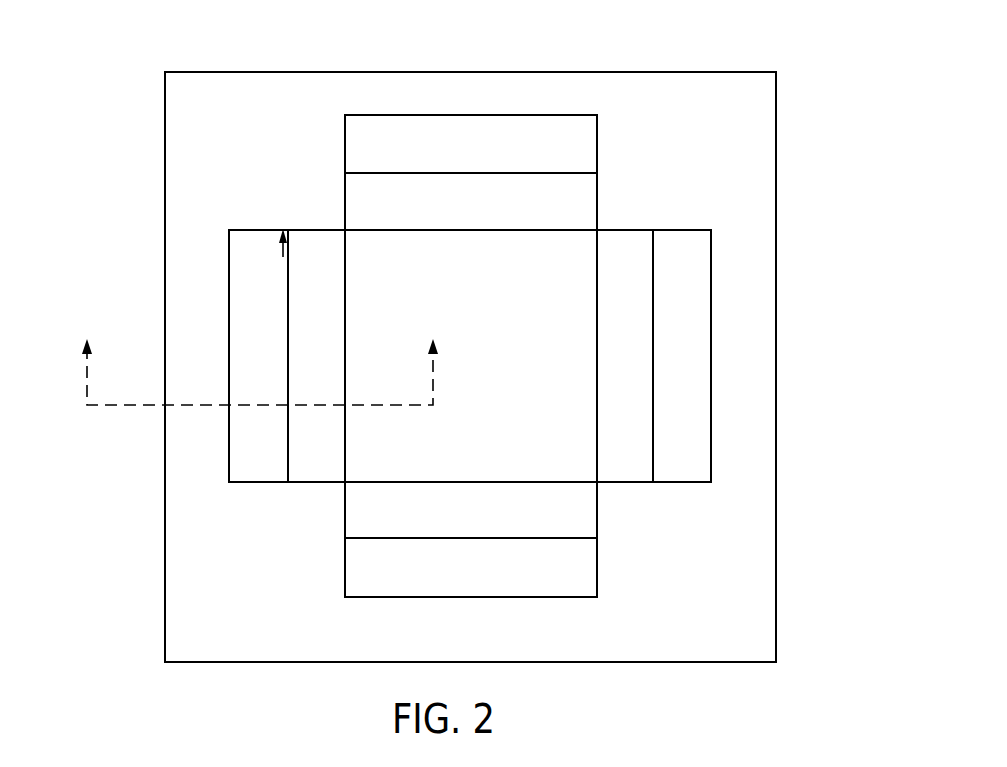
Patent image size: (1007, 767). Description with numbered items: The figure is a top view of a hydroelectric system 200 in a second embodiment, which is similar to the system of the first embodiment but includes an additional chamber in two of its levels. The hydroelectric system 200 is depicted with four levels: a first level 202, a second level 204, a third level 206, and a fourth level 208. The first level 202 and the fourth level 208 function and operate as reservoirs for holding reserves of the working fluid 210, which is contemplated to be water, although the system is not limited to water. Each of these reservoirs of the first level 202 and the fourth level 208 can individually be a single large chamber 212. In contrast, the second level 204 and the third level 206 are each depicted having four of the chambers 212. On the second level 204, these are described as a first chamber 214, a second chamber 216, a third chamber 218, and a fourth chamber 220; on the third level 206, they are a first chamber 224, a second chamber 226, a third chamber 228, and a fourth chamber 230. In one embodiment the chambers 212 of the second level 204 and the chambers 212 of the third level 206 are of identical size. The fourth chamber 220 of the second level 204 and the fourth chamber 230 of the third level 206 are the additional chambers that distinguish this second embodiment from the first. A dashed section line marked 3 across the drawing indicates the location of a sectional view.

The hydroelectric system 200 is at (453, 336).
The first level 202 is at (568, 262).
The second level 204 is at (617, 295).
The third level 206 is at (680, 323).
The fourth level 208 is at (728, 355).
The working fluid 210 is at (757, 630).
The chamber 212 is at (690, 492).
The first chamber 214 is at (493, 213).
The second chamber 216 is at (647, 369).
The third chamber 218 is at (493, 524).
The fourth chamber 220 is at (339, 369).
The first chamber 224 is at (493, 157).
The second chamber 226 is at (704, 369).
The third chamber 228 is at (493, 581).
The fourth chamber 230 is at (281, 369).
The section line 3- 3 is at (259, 357).